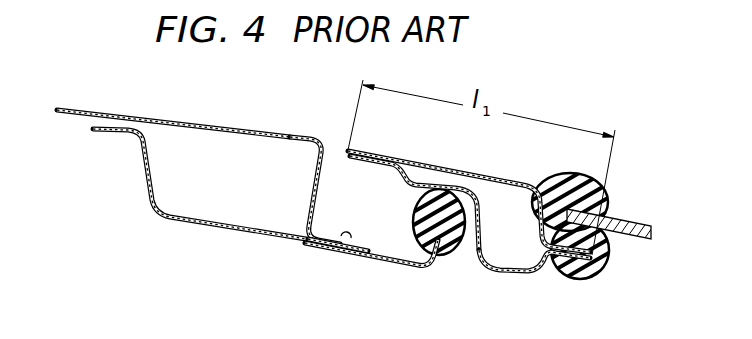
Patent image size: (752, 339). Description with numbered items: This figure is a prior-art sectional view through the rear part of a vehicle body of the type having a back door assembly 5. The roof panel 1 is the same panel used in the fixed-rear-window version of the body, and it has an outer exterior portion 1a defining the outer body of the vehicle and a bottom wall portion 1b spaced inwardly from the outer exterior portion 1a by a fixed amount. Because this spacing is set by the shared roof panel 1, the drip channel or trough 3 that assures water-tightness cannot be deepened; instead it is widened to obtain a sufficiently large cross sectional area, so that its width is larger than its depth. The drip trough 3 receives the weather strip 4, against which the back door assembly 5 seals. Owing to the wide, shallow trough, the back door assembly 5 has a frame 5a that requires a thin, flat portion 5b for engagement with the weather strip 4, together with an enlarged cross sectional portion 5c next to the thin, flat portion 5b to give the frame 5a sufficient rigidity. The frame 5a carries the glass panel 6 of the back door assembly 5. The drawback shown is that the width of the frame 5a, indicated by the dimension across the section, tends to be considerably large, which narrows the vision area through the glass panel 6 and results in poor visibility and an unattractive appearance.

The roof panel 1 is at (180, 112).
The outer exterior portion 1a is at (254, 127).
The bottom wall portion 1b is at (337, 248).
The drip channel or trough 3 is at (390, 239).
The weather strip 4 is at (447, 235).
The back door assembly 5 is at (535, 164).
The frame 5a is at (493, 178).
The thin, flat portion 5b is at (430, 180).
The enlarged cross sectional portion 5c is at (513, 273).
The glass panel 6 is at (622, 221).